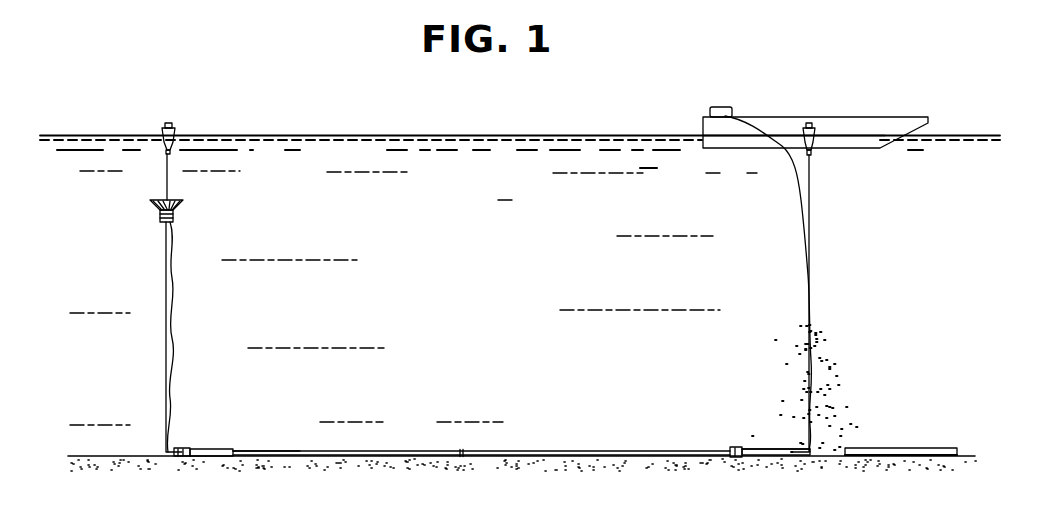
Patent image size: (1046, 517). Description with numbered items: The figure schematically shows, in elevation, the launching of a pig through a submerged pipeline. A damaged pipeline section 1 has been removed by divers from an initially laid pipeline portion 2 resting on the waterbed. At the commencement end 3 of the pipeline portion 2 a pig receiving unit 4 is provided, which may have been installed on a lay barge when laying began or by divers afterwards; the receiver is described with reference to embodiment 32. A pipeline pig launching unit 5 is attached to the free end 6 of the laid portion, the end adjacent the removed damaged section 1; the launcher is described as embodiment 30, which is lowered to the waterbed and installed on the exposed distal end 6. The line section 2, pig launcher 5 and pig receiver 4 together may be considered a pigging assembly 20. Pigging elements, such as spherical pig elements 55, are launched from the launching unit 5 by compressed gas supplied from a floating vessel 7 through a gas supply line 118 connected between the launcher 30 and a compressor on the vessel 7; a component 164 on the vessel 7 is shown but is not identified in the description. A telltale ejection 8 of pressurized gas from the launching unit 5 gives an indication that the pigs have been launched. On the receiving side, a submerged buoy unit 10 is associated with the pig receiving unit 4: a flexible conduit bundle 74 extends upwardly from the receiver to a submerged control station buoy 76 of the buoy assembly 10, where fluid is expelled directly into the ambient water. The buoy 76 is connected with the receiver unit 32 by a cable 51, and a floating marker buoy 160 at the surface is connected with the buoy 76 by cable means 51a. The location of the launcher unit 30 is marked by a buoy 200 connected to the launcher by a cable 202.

The damaged pipeline section 1 is at (892, 447).
The initially laid pipeline portion 2 is at (410, 449).
The commencement end 3 is at (253, 457).
The pig receiving unit 4 is at (213, 457).
The pipeline pig launching unit 5 is at (757, 457).
The free end 6 is at (722, 457).
The floating vessel 7 is at (888, 149).
The telltale ejection 8 is at (832, 381).
The submerged buoy unit 10 is at (204, 182).
The pigging assembly 20 is at (443, 412).
The launcher embodiment 30 is at (770, 439).
The receiver embodiment 32 is at (225, 448).
The cable 51 is at (166, 240).
The cable means 51a is at (166, 174).
The spherical pig elements 55 is at (462, 455).
The flexible conduit bundle 74 is at (175, 240).
The submerged control station buoy 76 is at (183, 207).
The gas supply line 118 is at (793, 162).
The floating marker buoy 160 is at (173, 123).
The control unit 164 is at (712, 110).
The buoy 200 is at (818, 148).
The cable 202 is at (812, 213).